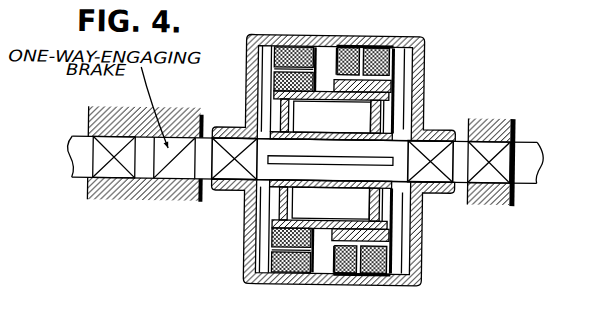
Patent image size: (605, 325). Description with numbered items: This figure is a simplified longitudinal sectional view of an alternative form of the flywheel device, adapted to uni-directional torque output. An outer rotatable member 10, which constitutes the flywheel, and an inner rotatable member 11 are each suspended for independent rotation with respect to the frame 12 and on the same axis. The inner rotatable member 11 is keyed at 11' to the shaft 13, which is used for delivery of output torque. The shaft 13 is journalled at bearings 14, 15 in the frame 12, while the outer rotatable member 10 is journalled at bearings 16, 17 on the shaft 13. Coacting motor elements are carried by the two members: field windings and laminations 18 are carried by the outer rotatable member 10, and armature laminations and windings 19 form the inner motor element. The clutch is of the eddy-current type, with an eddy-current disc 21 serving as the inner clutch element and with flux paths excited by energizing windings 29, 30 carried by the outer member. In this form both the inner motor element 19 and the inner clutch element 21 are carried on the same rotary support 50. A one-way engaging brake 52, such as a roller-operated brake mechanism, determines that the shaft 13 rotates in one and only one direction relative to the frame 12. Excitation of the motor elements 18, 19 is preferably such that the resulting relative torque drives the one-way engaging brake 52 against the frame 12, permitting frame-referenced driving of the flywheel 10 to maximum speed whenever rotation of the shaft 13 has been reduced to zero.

The outer rotatable member 10 is at (246, 31).
The inner rotatable member 11 is at (358, 161).
The key 11' is at (330, 152).
The frame 12 is at (178, 114).
The shaft 13 is at (539, 145).
The bearing 14 is at (110, 170).
The bearing 15 is at (505, 164).
The bearing 16 is at (233, 168).
The bearing 17 is at (433, 168).
The field windings and laminations 18 is at (290, 42).
The armature laminations and windings 19 is at (322, 68).
The eddy-current disc 21 is at (390, 81).
The energizing winding 29 is at (353, 43).
The energizing winding 30 is at (383, 33).
The rotary support 50 is at (319, 97).
The one-way engaging brake 52 is at (177, 168).